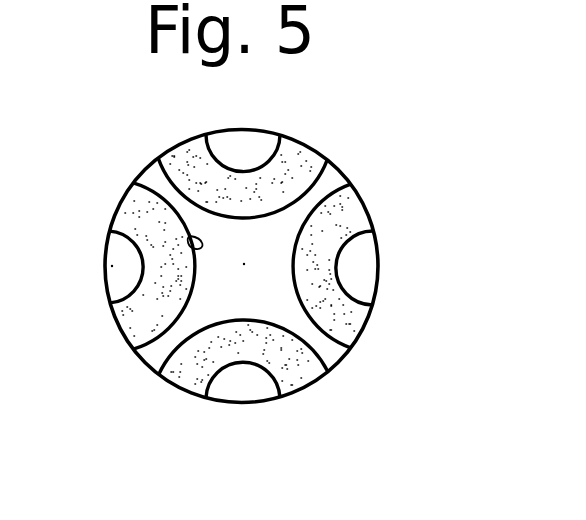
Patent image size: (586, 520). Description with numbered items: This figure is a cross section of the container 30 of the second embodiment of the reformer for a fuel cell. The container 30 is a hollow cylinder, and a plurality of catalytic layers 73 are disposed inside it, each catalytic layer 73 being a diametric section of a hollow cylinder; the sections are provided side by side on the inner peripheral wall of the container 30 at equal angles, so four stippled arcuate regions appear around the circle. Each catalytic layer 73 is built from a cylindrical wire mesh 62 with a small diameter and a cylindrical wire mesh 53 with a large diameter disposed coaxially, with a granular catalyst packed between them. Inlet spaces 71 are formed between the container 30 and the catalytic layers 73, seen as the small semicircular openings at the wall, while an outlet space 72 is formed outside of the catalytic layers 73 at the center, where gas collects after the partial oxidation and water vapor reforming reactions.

The container 30 is at (330, 361).
The cylindrical wire mesh with a large diameter 53 is at (190, 237).
The cylindrical wire mesh with a small diameter 62 is at (110, 265).
The inlet space 71 is at (118, 283).
The outlet space 72 is at (244, 264).
The catalytic layer 73 is at (184, 148).